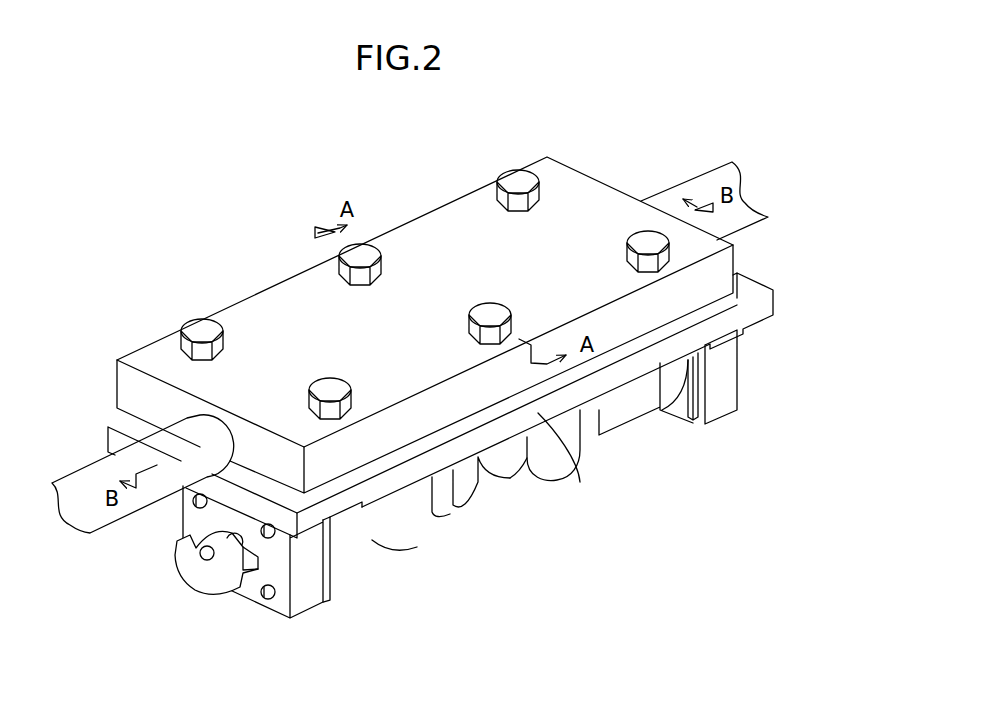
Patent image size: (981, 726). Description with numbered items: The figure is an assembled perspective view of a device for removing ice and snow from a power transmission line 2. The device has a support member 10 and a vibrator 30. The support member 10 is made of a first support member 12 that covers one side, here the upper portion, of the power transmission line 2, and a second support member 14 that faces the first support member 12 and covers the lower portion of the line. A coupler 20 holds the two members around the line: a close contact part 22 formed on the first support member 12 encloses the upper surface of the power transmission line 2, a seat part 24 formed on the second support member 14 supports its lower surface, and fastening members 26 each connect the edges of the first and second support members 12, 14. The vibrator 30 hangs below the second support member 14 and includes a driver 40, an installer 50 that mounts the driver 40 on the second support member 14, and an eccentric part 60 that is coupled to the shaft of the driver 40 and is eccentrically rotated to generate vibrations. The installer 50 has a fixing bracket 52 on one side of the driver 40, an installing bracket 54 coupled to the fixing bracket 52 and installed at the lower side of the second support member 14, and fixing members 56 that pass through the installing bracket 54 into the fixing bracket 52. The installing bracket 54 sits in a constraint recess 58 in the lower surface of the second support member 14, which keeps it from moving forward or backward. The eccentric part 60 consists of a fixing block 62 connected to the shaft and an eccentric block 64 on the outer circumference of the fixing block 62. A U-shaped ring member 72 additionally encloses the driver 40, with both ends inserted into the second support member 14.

The power transmission line 2 is at (707, 181).
The support member 10 is at (605, 440).
The first support member 12 is at (473, 403).
The second support member 14 is at (598, 502).
The coupler 20 is at (404, 347).
The close contact part 22 is at (205, 445).
The seat part 24 is at (108, 431).
The fastening members 26 is at (181, 352).
The vibrator 30 is at (309, 583).
The driver 40 is at (423, 571).
The installer 50 is at (313, 574).
The fixing bracket 52 is at (327, 547).
The installing bracket 54 is at (317, 580).
The fixing members 56 is at (275, 563).
The constraint recess 58 is at (345, 505).
The eccentric part 60 is at (237, 599).
The fixing block 62 is at (192, 557).
The eccentric block 64 is at (221, 587).
The ring member 72 is at (443, 520).